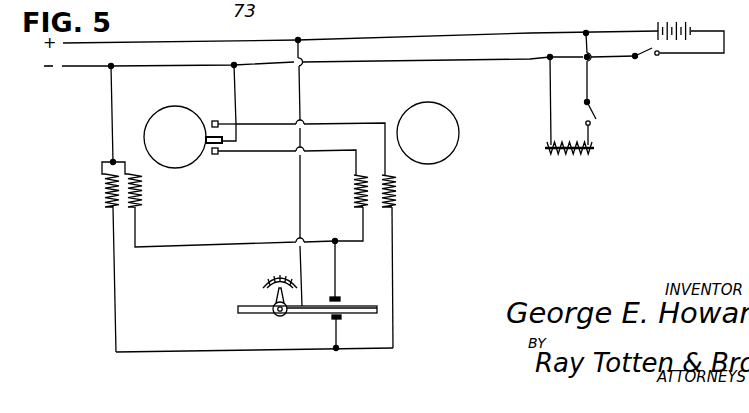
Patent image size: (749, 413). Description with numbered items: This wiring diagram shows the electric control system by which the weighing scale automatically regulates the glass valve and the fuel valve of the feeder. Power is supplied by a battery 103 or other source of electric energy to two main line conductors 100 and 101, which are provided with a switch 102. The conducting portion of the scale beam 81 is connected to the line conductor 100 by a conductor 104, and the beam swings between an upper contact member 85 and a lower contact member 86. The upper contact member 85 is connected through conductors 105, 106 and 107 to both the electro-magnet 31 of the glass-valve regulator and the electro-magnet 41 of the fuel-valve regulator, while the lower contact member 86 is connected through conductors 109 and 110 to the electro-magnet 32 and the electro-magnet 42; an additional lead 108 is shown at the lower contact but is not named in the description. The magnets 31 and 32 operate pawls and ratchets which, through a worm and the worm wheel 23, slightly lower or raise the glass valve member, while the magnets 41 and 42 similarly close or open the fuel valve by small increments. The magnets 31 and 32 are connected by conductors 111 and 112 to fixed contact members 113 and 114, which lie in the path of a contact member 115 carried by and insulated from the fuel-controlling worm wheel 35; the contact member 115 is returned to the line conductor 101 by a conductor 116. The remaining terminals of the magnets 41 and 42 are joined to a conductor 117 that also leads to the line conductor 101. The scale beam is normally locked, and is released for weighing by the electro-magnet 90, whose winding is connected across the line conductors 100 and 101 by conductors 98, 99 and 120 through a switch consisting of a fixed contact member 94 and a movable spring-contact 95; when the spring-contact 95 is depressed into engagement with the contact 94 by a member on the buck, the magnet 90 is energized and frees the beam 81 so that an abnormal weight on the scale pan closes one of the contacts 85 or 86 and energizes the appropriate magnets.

The worm wheel 23 is at (447, 124).
The electro-magnet 31 is at (354, 190).
The electro-magnet 32 is at (398, 190).
The worm wheel 35 is at (164, 109).
The electro-magnet 41 is at (143, 194).
The electro-magnet 42 is at (104, 193).
The scale beam 81 is at (367, 313).
The upper contact member 85 is at (339, 297).
The lower contact member 86 is at (332, 317).
The electro-magnet 90 is at (571, 155).
The fixed contact member 94 is at (573, 120).
The movable spring-contact 95 is at (594, 107).
The conductor 98 is at (590, 133).
The conductor 99 is at (589, 72).
The main line conductor 100 is at (422, 37).
The main line conductor 101 is at (423, 59).
The switch 102 is at (647, 59).
The battery 103 is at (673, 22).
The conductor 104 is at (300, 96).
The conductor 105 is at (336, 259).
The conductor 106 is at (363, 223).
The conductor 107 is at (227, 246).
The conductor 108 is at (337, 336).
The conductor 109 is at (395, 283).
The conductor 110 is at (227, 351).
The conductor 111 is at (287, 161).
The conductor 112 is at (310, 138).
The fixed contact member 113 is at (214, 154).
The fixed contact member 114 is at (215, 121).
The contact member 115 is at (244, 136).
The conductor 116 is at (238, 87).
The conductor 117 is at (112, 108).
The conductor 120 is at (550, 78).